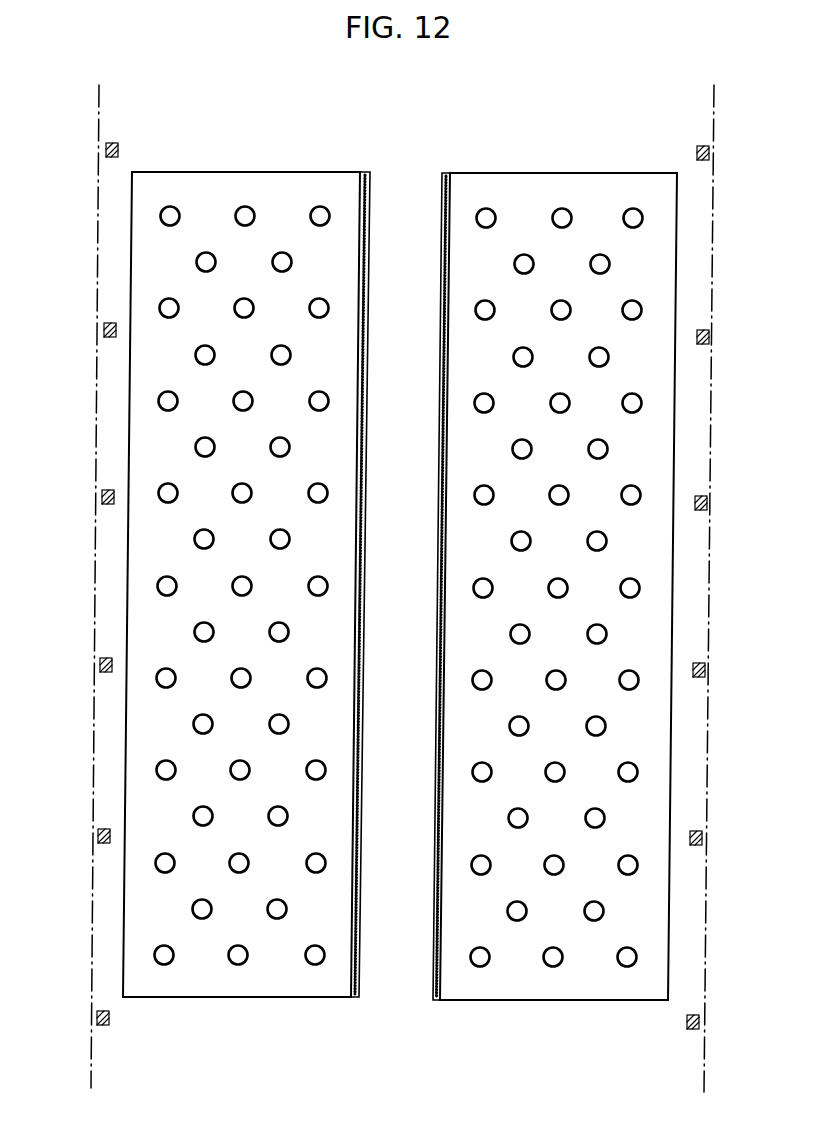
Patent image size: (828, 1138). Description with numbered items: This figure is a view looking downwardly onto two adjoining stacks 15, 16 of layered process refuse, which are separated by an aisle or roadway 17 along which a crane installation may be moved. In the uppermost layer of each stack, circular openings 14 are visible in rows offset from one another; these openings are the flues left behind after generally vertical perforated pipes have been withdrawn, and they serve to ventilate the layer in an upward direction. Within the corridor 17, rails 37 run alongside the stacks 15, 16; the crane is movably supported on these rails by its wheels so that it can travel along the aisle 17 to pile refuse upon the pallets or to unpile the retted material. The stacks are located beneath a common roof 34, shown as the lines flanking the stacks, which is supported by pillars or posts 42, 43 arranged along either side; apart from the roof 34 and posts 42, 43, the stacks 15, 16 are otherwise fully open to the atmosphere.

The circular openings 14 is at (246, 222).
The stack 15 is at (205, 186).
The stack 16 is at (590, 200).
The aisle 17 is at (397, 196).
The common roof 34 is at (97, 268).
The rails 37 is at (367, 220).
The pillars or posts 42 is at (100, 508).
The pillars or posts 43 is at (705, 144).